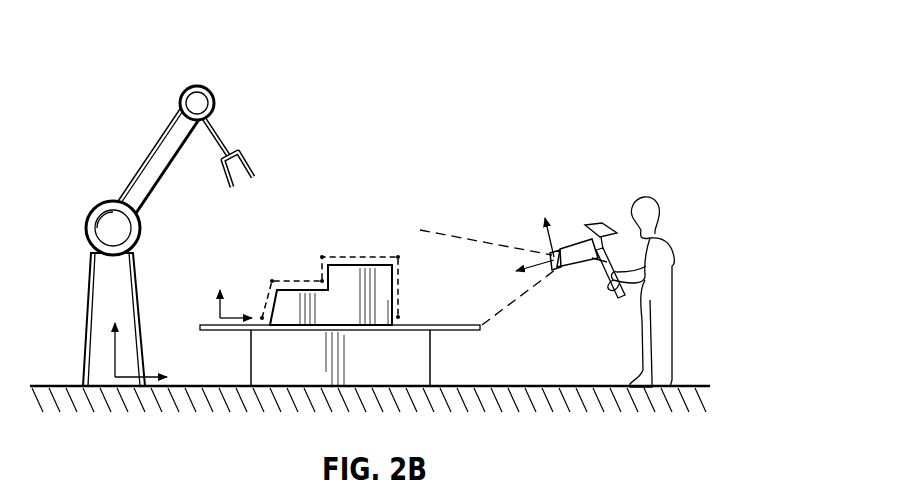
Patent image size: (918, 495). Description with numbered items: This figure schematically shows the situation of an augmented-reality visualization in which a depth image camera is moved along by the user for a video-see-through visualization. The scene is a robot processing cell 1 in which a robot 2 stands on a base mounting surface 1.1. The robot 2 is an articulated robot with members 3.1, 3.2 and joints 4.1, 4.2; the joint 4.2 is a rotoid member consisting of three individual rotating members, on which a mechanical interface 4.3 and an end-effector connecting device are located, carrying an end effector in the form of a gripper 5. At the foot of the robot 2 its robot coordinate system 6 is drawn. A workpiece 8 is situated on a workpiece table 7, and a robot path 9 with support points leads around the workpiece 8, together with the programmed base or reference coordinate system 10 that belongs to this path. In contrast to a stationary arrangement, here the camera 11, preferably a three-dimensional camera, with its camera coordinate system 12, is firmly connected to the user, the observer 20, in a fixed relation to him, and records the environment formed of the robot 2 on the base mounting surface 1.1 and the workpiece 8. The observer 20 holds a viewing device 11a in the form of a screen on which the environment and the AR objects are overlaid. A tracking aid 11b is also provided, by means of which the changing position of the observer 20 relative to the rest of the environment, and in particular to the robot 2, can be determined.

The robot processing cell 1 is at (476, 78).
The base mounting surface 1.1 is at (541, 386).
The robot 2 is at (73, 209).
The member 3.1 is at (92, 305).
The member 3.2 is at (148, 170).
The joint 4.1 is at (88, 241).
The joint 4.2 is at (181, 96).
The interface 4.3 is at (216, 142).
The gripper 5 is at (230, 188).
The robot coordinate system 6 is at (115, 358).
The workpiece table 7 is at (424, 360).
The workpiece 8 is at (385, 284).
The robot path 9 is at (368, 256).
The base or reference coordinate system 10 is at (217, 313).
The camera 11 is at (582, 264).
The viewing device 11a is at (612, 292).
The tracking aid 11b is at (602, 223).
The camera coordinate system 12 is at (556, 238).
The observer 20 is at (672, 308).